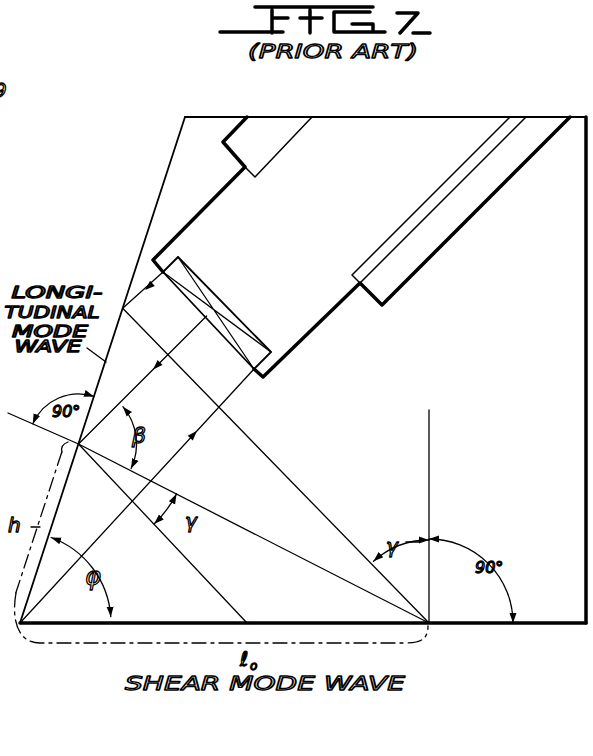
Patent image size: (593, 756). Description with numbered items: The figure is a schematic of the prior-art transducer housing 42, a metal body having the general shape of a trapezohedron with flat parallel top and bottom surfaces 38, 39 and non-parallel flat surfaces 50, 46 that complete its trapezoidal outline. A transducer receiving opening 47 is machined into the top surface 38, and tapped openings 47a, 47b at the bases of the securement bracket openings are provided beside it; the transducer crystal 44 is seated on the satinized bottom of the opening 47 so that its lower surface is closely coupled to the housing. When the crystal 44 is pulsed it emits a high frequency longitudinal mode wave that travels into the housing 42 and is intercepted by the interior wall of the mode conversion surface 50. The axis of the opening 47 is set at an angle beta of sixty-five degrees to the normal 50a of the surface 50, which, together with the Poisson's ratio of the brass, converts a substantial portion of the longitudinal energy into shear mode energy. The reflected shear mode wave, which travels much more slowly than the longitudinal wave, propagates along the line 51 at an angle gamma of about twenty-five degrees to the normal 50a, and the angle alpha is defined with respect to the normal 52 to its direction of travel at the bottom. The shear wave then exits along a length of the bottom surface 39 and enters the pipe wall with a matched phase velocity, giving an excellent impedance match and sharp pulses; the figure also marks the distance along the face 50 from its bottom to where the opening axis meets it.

The top surface 38 is at (380, 117).
The bottom surface 39 is at (502, 627).
The housing 42 is at (294, 353).
The transducer crystal 44 is at (213, 296).
The flat surface 46 is at (0, 203).
The transducer receiving opening 47 is at (325, 317).
The tapped opening 47a is at (272, 107).
The tapped opening 47b is at (540, 140).
The mode conversion surface 50 is at (160, 192).
The normal to surface 50 50a is at (30, 423).
The line of shear mode propagation 51 is at (213, 586).
The normal to direction of travel 52 is at (430, 478).